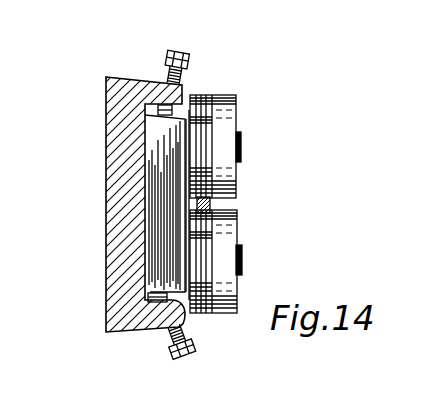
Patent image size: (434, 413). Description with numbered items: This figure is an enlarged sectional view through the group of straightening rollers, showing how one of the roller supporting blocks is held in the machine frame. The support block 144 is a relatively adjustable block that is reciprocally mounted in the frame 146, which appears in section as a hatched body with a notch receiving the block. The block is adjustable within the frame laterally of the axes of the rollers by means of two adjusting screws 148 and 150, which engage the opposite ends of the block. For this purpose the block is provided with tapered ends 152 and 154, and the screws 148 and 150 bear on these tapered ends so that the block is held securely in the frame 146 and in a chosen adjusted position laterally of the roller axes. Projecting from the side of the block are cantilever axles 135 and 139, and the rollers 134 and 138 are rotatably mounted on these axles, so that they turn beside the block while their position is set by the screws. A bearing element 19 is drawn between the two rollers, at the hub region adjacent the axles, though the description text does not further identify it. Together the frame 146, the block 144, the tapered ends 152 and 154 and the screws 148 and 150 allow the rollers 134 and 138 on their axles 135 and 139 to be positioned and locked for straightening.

The bearing 19 is at (217, 203).
The roller 134 is at (237, 104).
The cantilever axle 135 is at (242, 144).
The roller 138 is at (238, 226).
The cantilever axle 139 is at (243, 258).
The support block 144 is at (155, 134).
The frame 146 is at (106, 231).
The adjusting screw 148 is at (195, 43).
The adjusting screw 150 is at (182, 356).
The tapered end 152 is at (185, 92).
The tapered end 154 is at (185, 322).